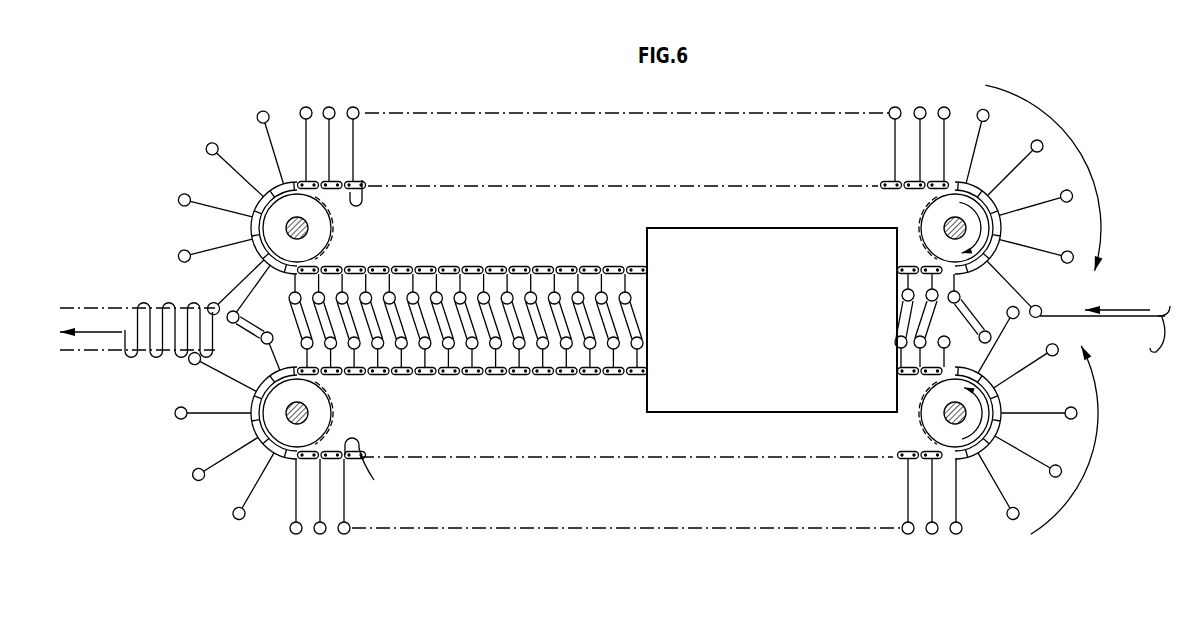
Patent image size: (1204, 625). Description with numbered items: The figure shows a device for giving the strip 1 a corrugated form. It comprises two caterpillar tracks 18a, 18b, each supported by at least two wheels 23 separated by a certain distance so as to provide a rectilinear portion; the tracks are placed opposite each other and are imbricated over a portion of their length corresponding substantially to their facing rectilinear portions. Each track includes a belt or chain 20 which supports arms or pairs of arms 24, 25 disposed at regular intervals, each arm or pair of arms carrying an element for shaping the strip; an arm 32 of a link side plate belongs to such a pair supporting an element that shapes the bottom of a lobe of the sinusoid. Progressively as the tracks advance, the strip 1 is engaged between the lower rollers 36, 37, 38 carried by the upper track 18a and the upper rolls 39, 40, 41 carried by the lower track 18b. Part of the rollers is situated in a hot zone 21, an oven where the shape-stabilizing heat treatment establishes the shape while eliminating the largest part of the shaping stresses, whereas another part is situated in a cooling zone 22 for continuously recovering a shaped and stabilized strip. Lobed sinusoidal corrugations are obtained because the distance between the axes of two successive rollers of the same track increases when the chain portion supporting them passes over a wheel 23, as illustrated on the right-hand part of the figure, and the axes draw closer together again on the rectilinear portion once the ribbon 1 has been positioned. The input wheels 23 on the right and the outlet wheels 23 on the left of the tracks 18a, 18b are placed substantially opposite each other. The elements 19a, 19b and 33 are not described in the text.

The strip 1 is at (150, 302).
The upper caterpillar track 18a is at (484, 131).
The lower caterpillar track 18b is at (494, 508).
The upper outer needles 19a is at (353, 107).
The lower outer needles 19b is at (344, 536).
The chain 20 is at (364, 198).
The hot zone 21 is at (766, 329).
The cooling zone 22 is at (506, 401).
The wheel 23 is at (308, 229).
The arms 24 is at (330, 134).
The arms 25 is at (322, 500).
The arm 32 is at (439, 372).
The upper chain 33 is at (437, 274).
The lower roller 36 is at (1041, 309).
The lower roller 37 is at (992, 336).
The lower roller 38 is at (952, 342).
The upper roll 39 is at (1018, 293).
The upper roll 40 is at (960, 297).
The upper roll 41 is at (897, 285).